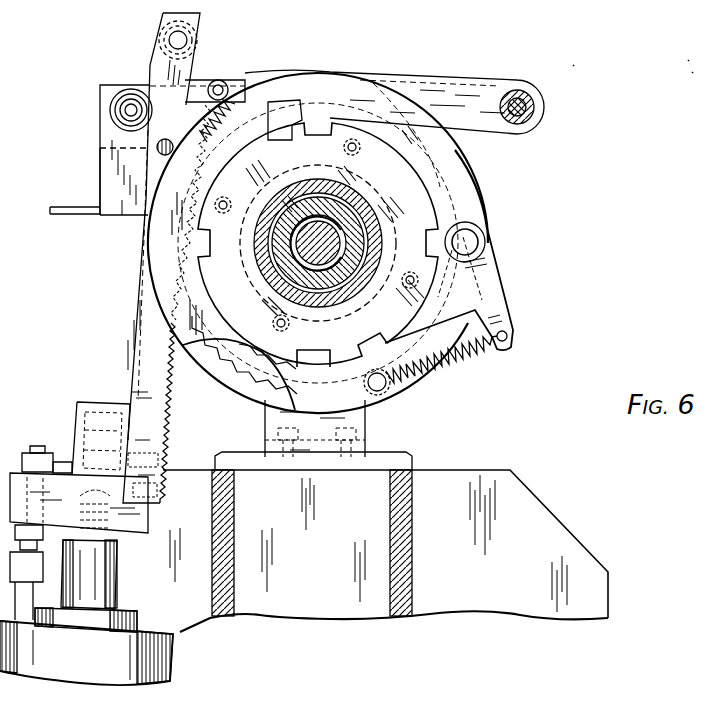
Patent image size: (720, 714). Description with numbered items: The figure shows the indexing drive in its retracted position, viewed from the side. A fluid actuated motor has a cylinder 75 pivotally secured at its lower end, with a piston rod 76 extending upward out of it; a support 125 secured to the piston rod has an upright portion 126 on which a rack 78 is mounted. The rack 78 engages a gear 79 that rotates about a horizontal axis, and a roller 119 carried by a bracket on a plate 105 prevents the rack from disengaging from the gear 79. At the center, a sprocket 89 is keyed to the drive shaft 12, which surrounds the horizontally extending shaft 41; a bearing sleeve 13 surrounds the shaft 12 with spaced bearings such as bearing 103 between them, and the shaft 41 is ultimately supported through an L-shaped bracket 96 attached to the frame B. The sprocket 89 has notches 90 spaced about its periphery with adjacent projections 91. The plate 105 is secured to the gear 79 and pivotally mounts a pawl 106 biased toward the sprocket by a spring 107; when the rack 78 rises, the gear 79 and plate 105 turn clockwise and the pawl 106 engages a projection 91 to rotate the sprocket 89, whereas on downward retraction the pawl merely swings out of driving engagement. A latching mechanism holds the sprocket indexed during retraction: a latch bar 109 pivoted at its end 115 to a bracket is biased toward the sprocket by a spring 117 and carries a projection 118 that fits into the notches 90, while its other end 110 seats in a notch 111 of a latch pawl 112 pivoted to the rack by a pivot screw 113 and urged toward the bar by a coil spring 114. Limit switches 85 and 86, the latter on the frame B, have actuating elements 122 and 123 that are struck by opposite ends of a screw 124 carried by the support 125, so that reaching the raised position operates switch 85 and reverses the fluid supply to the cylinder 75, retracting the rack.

The drive shaft 12 is at (365, 230).
The bearing sleeve 13 is at (270, 286).
The shaft 41 is at (345, 286).
The cylinder 75 is at (78, 670).
The piston rod 76 is at (108, 592).
The rack 78 is at (142, 378).
The gear 79 is at (230, 368).
The limit switch 85 is at (115, 158).
The limit switch 86 is at (40, 584).
The sprocket 89 is at (394, 170).
The notches 90 is at (344, 148).
The projections 91 is at (287, 108).
The L-shaped bracket 96 is at (366, 418).
The bearing 103 is at (343, 205).
The plate 105 is at (480, 214).
The pawl 106 is at (503, 292).
The spring 107 is at (452, 372).
The latch bar 109 is at (437, 84).
The end of latch bar 110 is at (205, 80).
The notch 111 is at (166, 138).
The latch pawl 112 is at (110, 136).
The pivot screw 113 is at (190, 38).
The coil spring 114 is at (153, 62).
The end of latch bar 115 is at (515, 85).
The spring 117 is at (240, 92).
The projection 118 is at (288, 134).
The roller 119 is at (110, 84).
The actuating element 122 is at (72, 208).
The actuating element 123 is at (120, 465).
The screw 124 is at (35, 452).
The support 125 is at (60, 472).
The upright portion 126 is at (77, 405).
The frame B is at (577, 546).